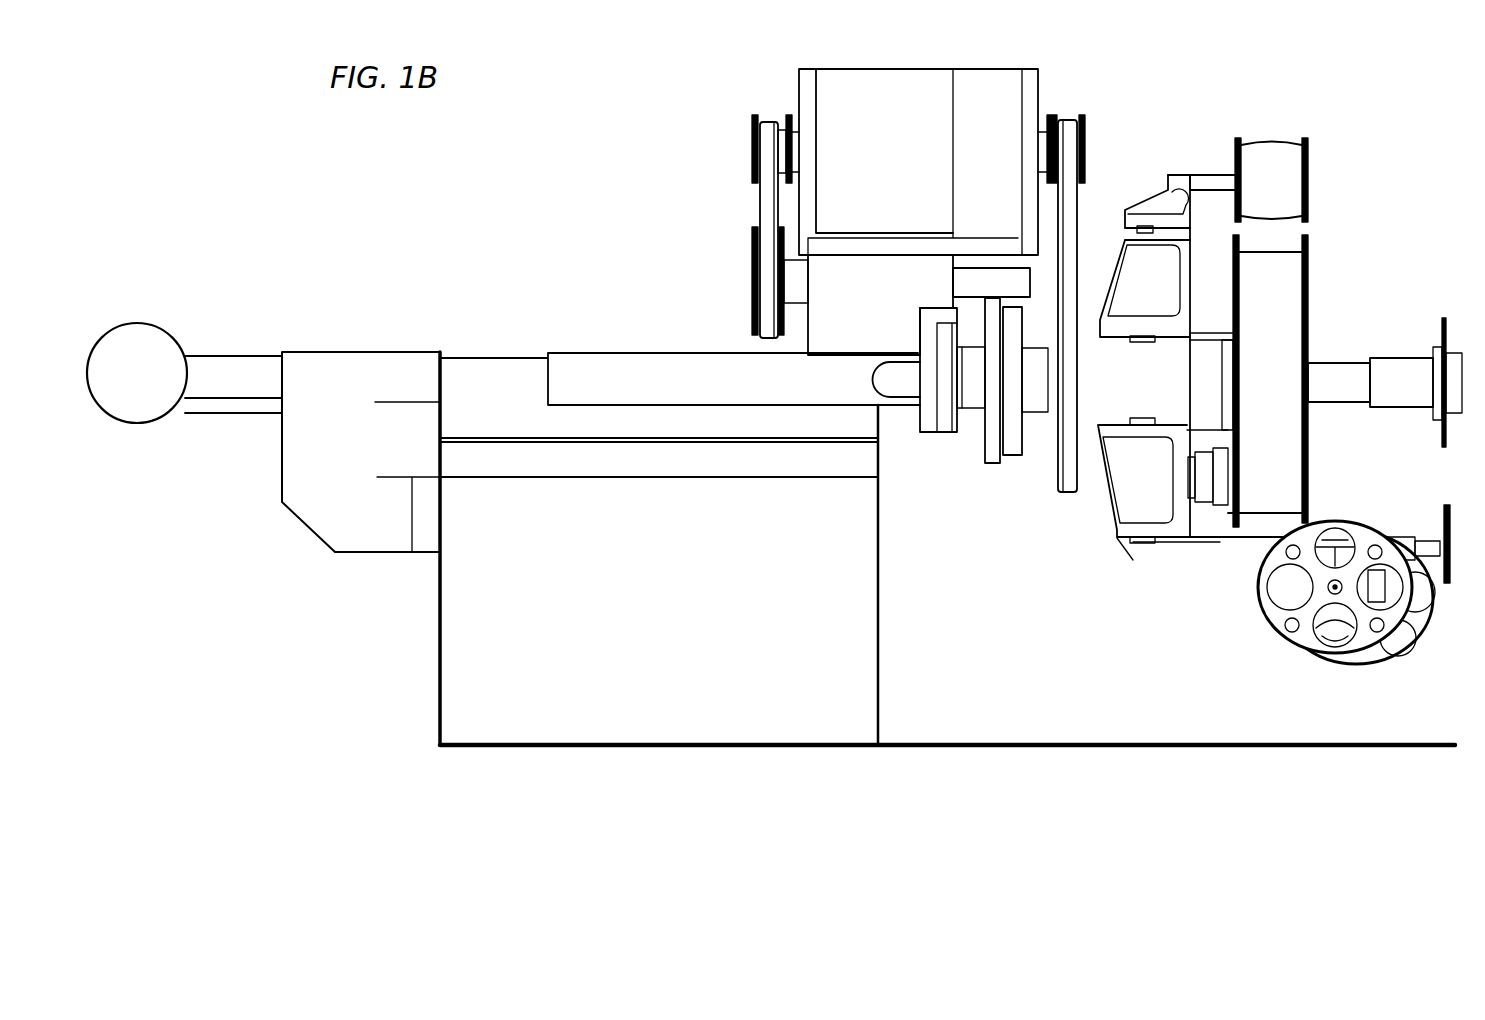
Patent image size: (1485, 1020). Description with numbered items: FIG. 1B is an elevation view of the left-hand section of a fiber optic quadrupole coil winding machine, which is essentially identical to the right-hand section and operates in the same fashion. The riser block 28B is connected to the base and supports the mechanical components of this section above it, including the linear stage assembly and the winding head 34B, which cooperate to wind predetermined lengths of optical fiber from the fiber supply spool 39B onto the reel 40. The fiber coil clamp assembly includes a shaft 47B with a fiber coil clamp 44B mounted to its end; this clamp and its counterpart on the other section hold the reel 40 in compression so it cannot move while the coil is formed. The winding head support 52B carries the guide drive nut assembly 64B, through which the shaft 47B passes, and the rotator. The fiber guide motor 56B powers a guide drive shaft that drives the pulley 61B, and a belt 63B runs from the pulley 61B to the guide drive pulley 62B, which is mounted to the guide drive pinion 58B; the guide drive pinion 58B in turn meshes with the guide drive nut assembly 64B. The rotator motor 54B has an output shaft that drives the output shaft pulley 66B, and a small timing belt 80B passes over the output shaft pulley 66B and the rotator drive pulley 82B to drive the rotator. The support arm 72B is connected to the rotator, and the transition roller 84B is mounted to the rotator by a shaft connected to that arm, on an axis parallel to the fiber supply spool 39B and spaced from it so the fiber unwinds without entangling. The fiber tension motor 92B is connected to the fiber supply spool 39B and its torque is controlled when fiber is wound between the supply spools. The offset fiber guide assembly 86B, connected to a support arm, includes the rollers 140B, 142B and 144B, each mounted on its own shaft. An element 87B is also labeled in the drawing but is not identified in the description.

The riser block 28B is at (440, 593).
The shaft 47B is at (504, 358).
The winding head support 52B is at (955, 432).
The rotator motor 54B is at (980, 69).
The fiber guide motor 56B is at (845, 69).
The guide drive pinion 58B is at (1012, 232).
The output shaft pulley 66B is at (752, 132).
The belt 63B is at (760, 205).
The rotator drive pulley 82B is at (755, 295).
The guide drive nut assembly 64B is at (982, 484).
The pulley 61B is at (1088, 142).
The guide drive pulley 62B is at (1052, 483).
The winding head 34B is at (1203, 118).
The support arm 72B is at (1180, 175).
The small timing belt 80B is at (1077, 228).
The spindle 87B is at (1212, 175).
The transition roller 84B is at (1277, 142).
The fiber supply spool 39B is at (1310, 275).
The fiber tension motor 92B is at (1222, 503).
The fiber coil clamp 44B is at (1392, 358).
The reel 40 is at (1447, 320).
The offset fiber guide assembly 86B is at (1252, 687).
The roller 144B is at (1444, 512).
The roller 140B is at (1376, 656).
The roller 142B is at (1270, 625).